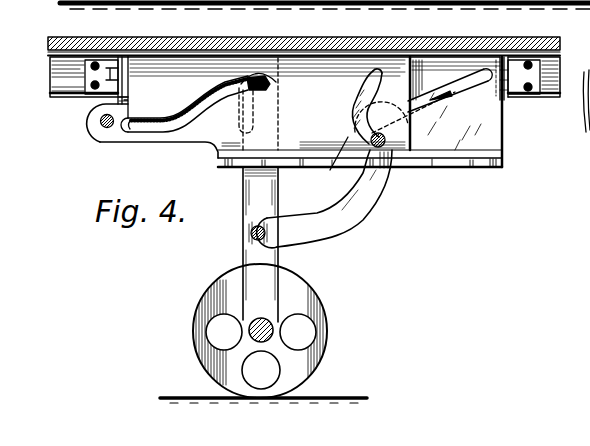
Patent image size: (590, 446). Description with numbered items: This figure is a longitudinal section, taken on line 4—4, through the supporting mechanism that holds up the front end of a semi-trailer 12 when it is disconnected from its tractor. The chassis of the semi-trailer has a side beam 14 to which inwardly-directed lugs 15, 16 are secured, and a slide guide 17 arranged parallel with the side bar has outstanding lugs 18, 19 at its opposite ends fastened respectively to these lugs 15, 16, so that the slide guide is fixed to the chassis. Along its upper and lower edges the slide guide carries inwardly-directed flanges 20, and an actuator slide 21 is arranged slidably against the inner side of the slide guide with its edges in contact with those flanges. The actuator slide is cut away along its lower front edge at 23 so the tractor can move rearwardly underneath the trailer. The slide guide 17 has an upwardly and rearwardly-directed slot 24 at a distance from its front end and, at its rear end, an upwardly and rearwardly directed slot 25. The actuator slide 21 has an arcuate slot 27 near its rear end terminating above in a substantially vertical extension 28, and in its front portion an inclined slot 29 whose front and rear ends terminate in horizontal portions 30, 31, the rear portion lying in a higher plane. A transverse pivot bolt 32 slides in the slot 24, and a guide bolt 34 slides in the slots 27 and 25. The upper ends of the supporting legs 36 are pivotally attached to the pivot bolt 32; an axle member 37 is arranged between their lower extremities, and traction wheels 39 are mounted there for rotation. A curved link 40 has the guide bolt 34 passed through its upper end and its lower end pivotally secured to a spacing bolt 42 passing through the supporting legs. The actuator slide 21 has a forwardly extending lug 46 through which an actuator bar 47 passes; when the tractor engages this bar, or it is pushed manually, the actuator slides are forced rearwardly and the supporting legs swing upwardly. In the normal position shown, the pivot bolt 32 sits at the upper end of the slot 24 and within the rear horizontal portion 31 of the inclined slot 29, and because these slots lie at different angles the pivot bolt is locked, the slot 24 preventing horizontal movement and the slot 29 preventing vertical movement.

The section line 4 is at (154, 20).
The semi-trailer 12 is at (352, 49).
The side beam 14 is at (555, 97).
The inwardly-directed lug 15 is at (118, 88).
The inwardly-directed lug 16 is at (508, 103).
The slide guide 17 is at (470, 147).
The outstanding lug 18 is at (130, 99).
The outstanding lug 19 is at (476, 106).
The inwardly-directed flange 20 is at (279, 59).
The actuator slide 21 is at (347, 107).
The cut-away portion 23 is at (212, 155).
The upwardly and rearwardly-directed slot 24 is at (238, 118).
The upwardly and rearwardly directed slot 25 is at (458, 91).
The arcuate slot 27 is at (348, 137).
The vertical extension 28 is at (372, 74).
The inclined slot 29 is at (203, 88).
The front horizontal portion 30 is at (145, 130).
The rear horizontal portion 31 is at (251, 76).
The pivot bolt 32 is at (271, 83).
The guide bolt 34 is at (386, 168).
The supporting leg 36 is at (245, 258).
The axle member 37 is at (266, 326).
The traction wheel 39 is at (324, 318).
The curved link 40 is at (330, 228).
The spacing bolt 42 is at (273, 236).
The forwardly extending lug 46 is at (99, 129).
The actuator bar 47 is at (106, 128).